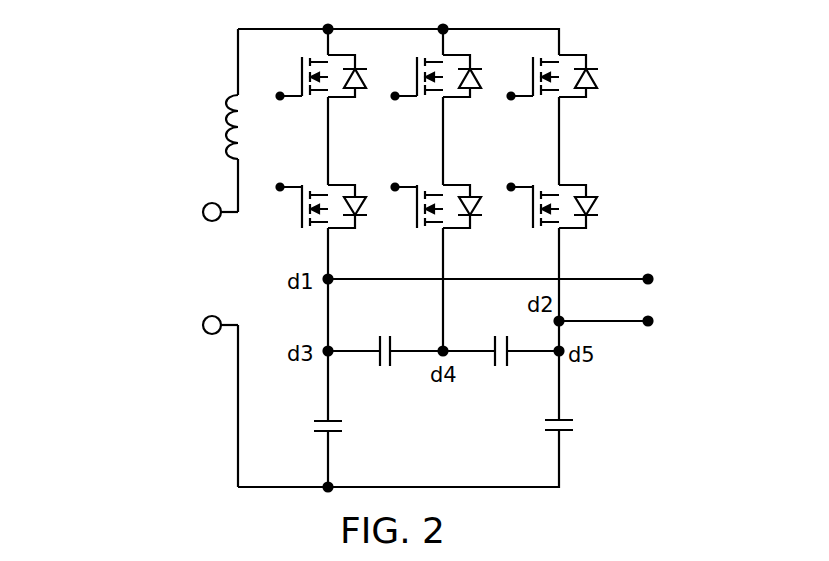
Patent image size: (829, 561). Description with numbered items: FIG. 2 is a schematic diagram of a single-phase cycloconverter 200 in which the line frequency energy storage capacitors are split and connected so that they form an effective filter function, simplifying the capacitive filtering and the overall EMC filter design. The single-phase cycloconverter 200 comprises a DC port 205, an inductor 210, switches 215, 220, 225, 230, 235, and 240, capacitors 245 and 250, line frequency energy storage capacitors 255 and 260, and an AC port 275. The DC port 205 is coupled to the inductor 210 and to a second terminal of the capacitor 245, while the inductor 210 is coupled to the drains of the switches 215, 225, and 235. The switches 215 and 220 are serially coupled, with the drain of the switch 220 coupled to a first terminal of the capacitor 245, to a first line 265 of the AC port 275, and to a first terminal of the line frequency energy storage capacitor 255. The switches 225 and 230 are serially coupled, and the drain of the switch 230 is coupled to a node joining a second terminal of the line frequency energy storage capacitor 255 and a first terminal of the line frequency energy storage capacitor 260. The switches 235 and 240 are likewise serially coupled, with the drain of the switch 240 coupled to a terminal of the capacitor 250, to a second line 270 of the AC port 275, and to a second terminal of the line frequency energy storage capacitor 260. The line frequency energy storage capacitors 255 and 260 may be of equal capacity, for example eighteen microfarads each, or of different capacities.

The single-phase cycloconverter 200 is at (86, 78).
The DC port 205 is at (226, 270).
The inductor 210 is at (224, 122).
The switch 215 is at (320, 99).
The switch 220 is at (345, 183).
The switch 225 is at (455, 98).
The switch 230 is at (455, 183).
The switch 235 is at (590, 70).
The switch 240 is at (592, 212).
The capacitor 245 is at (340, 432).
The capacitor 250 is at (570, 432).
The line frequency energy storage capacitor 255 is at (392, 358).
The line frequency energy storage capacitor 260 is at (493, 358).
The first line 265 is at (628, 278).
The second line 270 is at (620, 322).
The AC port 275 is at (647, 300).